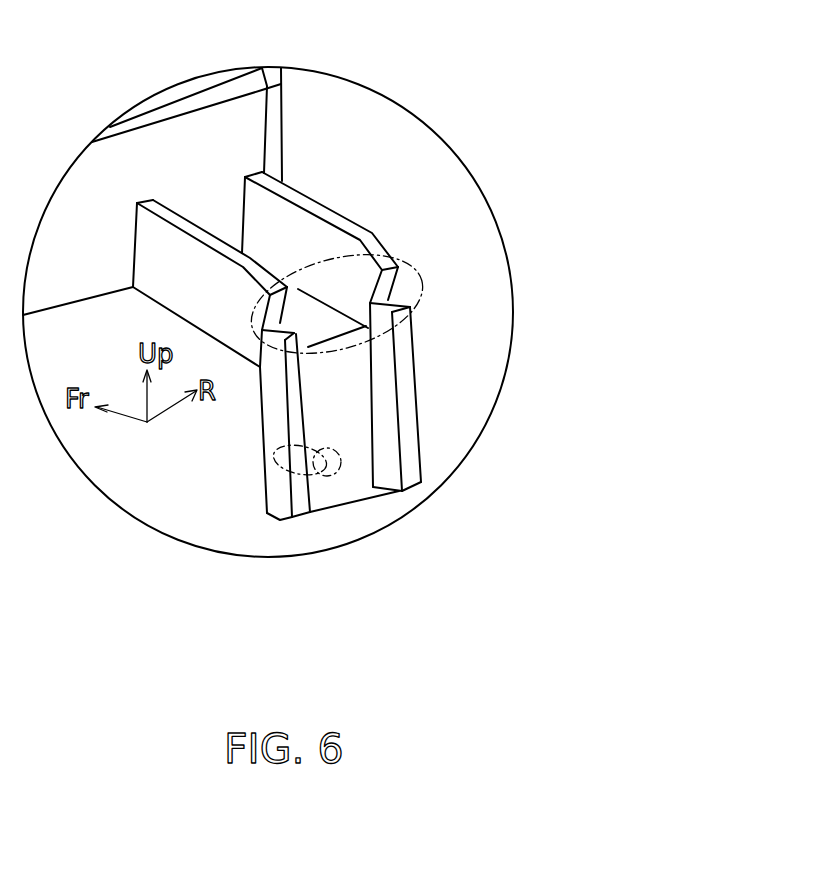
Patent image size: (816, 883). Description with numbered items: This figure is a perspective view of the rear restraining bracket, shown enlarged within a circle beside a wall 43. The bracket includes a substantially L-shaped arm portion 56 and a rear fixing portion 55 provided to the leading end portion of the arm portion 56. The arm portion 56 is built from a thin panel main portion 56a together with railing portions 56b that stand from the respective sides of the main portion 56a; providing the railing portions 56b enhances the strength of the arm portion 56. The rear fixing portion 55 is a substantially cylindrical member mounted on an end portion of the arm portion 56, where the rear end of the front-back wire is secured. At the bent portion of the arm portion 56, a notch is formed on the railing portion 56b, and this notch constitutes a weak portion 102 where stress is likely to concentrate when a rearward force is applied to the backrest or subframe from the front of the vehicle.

The side wall 43 is at (140, 143).
The rear fixing portion 55 is at (276, 457).
The arm portion 56 is at (335, 368).
The main portion 56a is at (356, 481).
The railing portion 56b is at (416, 210).
The weak portion 102 is at (422, 276).